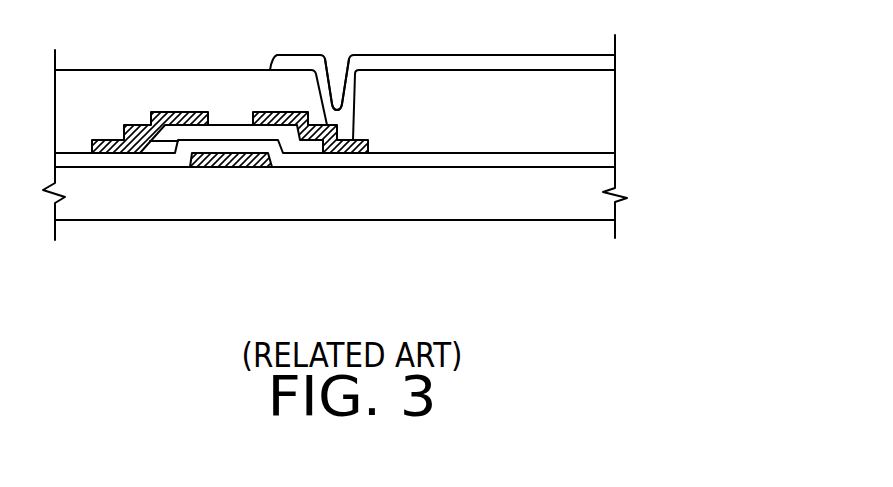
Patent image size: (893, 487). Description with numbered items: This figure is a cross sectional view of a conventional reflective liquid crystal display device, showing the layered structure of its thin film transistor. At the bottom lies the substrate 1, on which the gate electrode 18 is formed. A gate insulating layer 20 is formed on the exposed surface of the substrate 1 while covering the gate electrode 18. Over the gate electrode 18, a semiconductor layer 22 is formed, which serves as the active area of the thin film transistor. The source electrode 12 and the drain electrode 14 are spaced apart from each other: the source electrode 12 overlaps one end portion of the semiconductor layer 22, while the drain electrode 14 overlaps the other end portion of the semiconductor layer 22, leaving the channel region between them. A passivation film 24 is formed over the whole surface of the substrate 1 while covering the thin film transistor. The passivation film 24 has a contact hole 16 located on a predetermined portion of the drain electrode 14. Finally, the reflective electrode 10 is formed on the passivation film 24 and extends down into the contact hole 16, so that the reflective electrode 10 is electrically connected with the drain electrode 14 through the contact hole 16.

The substrate 1 is at (403, 203).
The reflective electrode 10 is at (472, 56).
The source electrode 12 is at (178, 110).
The drain electrode 14 is at (350, 147).
The contact hole 16 is at (340, 80).
The gate electrode 18 is at (235, 167).
The gate insulating layer 20 is at (482, 160).
The semiconductor layer 22 is at (232, 133).
The passivation film 24 is at (417, 103).